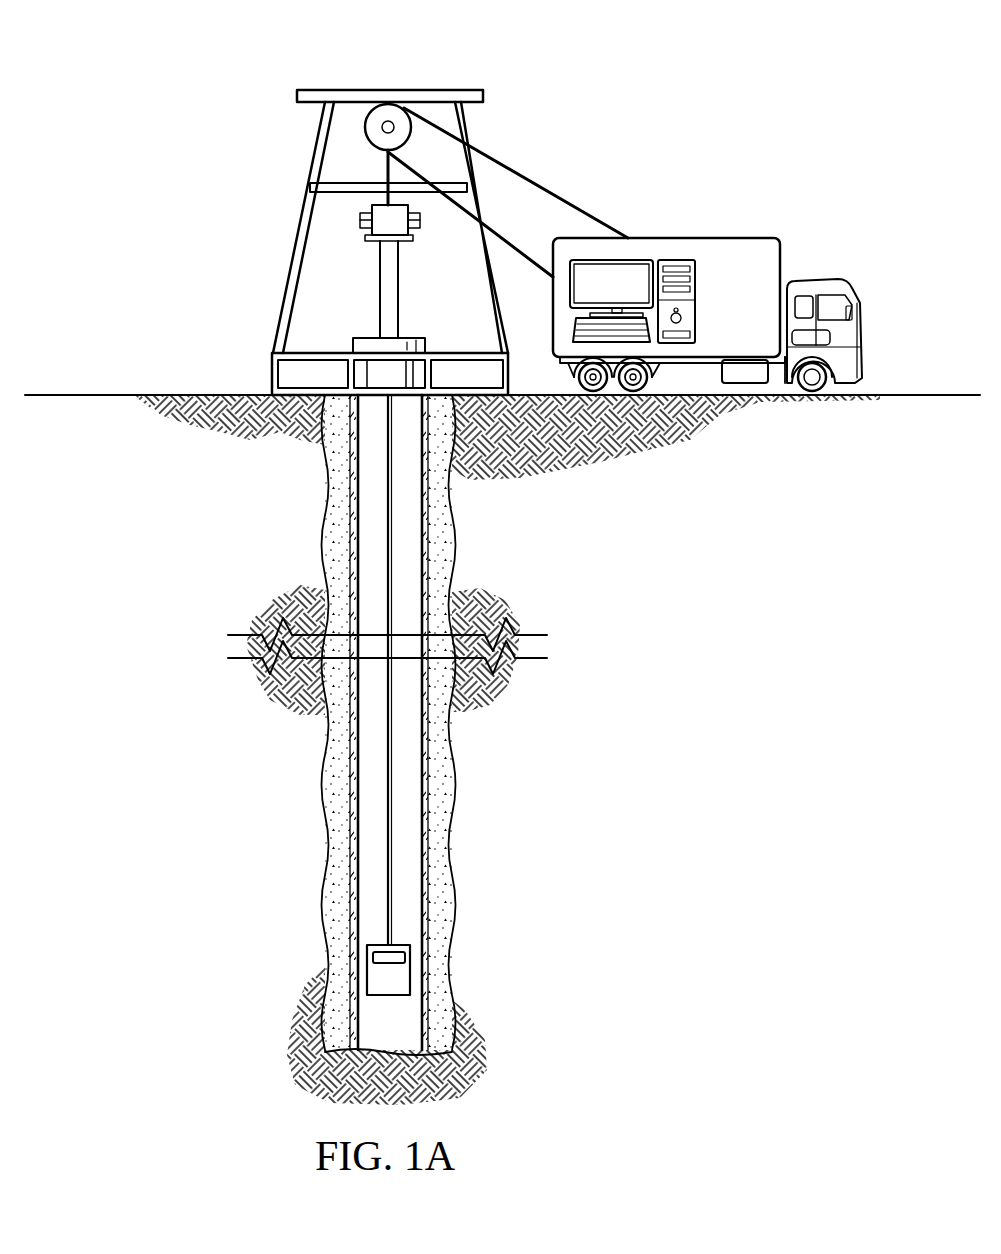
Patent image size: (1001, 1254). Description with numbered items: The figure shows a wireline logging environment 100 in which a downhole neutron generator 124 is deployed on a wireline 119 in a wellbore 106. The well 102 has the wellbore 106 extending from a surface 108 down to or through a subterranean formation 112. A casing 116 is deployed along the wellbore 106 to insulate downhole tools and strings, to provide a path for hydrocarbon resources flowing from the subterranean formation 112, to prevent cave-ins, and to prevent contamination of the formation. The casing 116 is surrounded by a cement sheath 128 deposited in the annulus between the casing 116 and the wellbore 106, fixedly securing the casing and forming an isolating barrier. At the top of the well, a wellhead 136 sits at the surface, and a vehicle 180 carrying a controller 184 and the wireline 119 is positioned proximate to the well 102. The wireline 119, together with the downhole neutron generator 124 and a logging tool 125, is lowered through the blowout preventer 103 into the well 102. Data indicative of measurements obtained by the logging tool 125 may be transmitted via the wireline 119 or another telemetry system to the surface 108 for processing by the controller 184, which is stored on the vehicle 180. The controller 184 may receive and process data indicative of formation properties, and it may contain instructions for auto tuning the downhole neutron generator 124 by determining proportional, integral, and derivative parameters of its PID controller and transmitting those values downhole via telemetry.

The wireline logging environment 100 is at (212, 57).
The well 102 is at (413, 335).
The blowout preventer 103 is at (380, 280).
The wellbore 106 is at (456, 788).
The surface 108 is at (115, 393).
The subterranean formation 112 is at (574, 870).
The casing 116 is at (425, 543).
The wireline 119 is at (388, 168).
The downhole neutron generator 124 is at (375, 958).
The logging tool 125 is at (410, 968).
The cement sheath 128 is at (332, 805).
The wellhead 136 is at (353, 347).
The vehicle 180 is at (665, 238).
The controller 184 is at (695, 300).